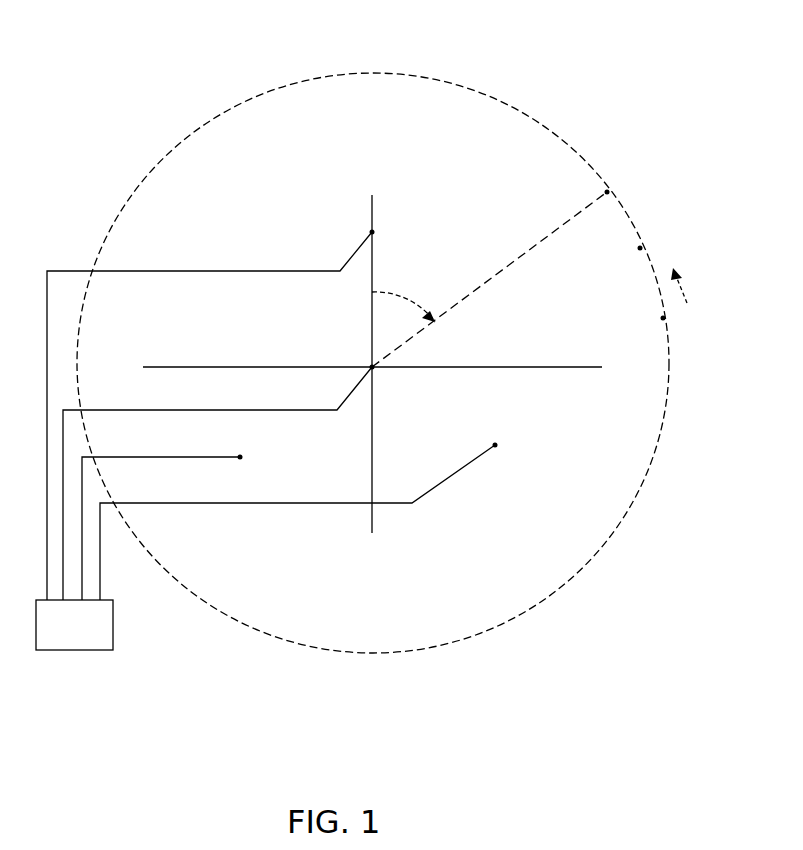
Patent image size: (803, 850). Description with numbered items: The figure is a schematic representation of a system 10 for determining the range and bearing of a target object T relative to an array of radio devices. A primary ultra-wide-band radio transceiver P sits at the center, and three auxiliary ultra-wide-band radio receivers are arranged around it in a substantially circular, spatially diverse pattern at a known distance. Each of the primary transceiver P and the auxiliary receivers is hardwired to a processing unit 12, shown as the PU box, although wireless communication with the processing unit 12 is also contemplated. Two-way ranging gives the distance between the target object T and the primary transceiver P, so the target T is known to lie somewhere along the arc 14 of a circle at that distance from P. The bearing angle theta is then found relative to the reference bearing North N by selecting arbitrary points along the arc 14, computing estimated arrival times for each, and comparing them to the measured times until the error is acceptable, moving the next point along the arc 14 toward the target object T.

The system 10 is at (172, 56).
The processing unit 12 is at (72, 652).
The arc 14 is at (371, 71).